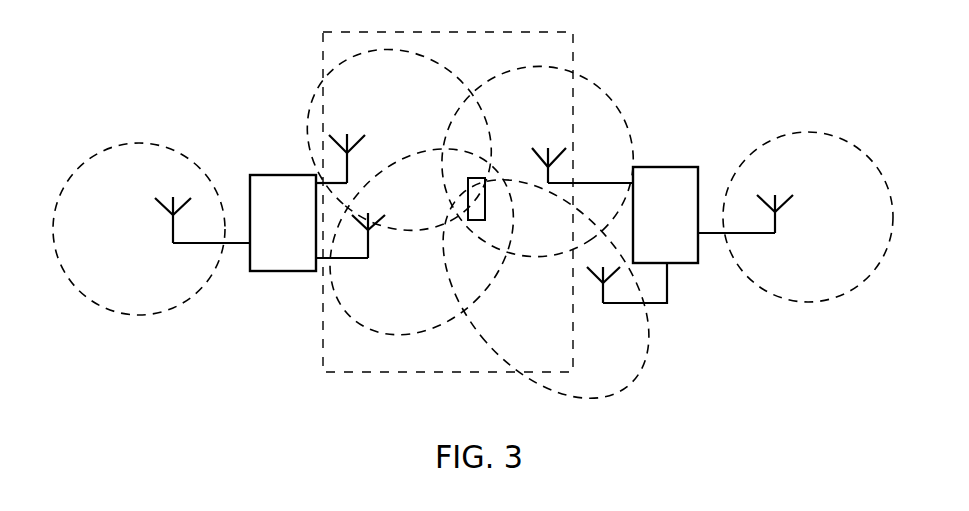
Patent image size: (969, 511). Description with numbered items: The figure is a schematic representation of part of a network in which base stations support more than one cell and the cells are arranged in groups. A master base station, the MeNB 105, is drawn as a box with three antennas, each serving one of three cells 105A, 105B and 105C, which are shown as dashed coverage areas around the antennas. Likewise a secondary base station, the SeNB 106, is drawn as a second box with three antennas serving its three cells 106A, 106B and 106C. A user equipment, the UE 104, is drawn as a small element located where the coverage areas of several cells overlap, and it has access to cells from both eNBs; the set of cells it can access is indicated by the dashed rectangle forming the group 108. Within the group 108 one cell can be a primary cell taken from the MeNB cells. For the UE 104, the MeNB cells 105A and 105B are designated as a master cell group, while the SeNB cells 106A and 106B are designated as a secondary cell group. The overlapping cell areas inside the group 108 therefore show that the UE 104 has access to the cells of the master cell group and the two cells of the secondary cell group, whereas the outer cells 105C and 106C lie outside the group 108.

The user equipment UE 104 is at (478, 222).
The MeNB 105 is at (305, 242).
The cell 105A is at (437, 287).
The cell 105B is at (428, 124).
The cell 105C is at (173, 286).
The SeNB 106 is at (688, 234).
The cell 106A is at (597, 124).
The cell 106B is at (648, 346).
The cell 106C is at (842, 274).
The group 108 is at (327, 360).